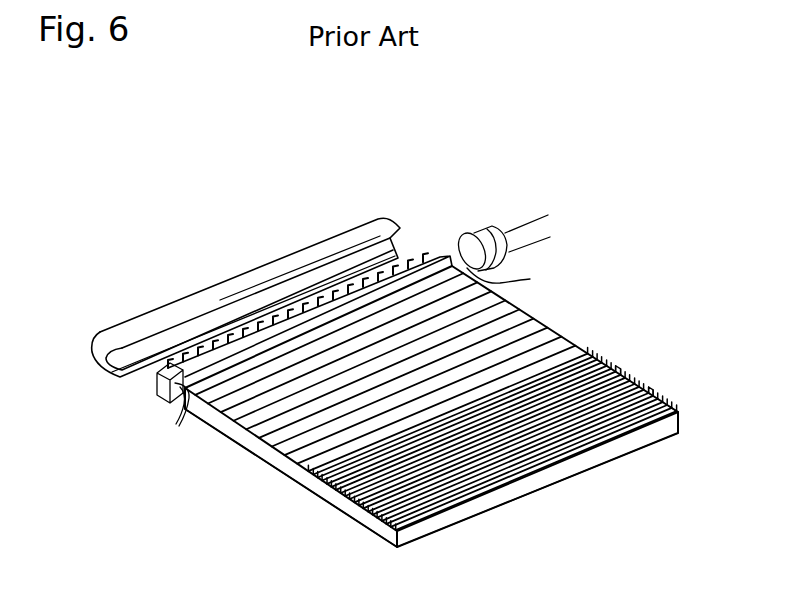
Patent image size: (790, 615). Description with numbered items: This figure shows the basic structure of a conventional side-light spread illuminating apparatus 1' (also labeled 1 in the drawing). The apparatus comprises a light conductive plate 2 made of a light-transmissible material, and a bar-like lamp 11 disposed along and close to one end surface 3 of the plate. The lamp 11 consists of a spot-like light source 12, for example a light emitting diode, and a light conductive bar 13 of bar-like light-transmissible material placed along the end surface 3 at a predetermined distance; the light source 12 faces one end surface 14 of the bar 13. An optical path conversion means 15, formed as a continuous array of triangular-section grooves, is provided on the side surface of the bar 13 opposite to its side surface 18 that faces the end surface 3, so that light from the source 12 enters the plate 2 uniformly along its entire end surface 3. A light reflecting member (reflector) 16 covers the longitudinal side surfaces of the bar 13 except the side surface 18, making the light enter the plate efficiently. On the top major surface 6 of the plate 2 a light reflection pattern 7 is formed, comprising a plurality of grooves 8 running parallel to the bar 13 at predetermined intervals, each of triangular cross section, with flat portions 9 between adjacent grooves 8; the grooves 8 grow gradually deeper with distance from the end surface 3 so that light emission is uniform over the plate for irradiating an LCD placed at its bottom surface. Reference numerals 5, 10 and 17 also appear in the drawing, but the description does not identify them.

The spread illuminating apparatus 1' is at (431, 433).
The spread illuminating apparatus 1 is at (431, 433).
The light conductive plate 2 is at (365, 527).
The end surface 3 is at (173, 404).
The side face 5 is at (281, 477).
The top major surface 6 is at (678, 408).
The light reflection pattern 7 is at (688, 302).
The grooves 8 is at (620, 377).
The flat portions 9 is at (655, 397).
The front face 10 is at (612, 452).
The bar-like lamp 11 is at (359, 240).
The spot-like light source 12 is at (497, 235).
The light conductive bar 13 is at (428, 262).
The end surface 14 is at (519, 269).
The optical path conversion means 15 is at (306, 298).
The light reflecting member 16 is at (246, 269).
The stop block 17 is at (162, 387).
The side surface 18 is at (212, 370).